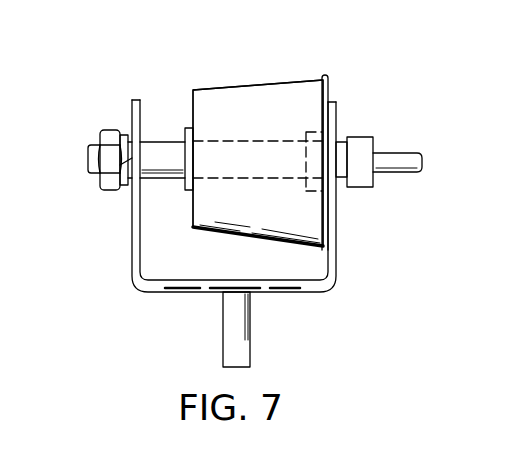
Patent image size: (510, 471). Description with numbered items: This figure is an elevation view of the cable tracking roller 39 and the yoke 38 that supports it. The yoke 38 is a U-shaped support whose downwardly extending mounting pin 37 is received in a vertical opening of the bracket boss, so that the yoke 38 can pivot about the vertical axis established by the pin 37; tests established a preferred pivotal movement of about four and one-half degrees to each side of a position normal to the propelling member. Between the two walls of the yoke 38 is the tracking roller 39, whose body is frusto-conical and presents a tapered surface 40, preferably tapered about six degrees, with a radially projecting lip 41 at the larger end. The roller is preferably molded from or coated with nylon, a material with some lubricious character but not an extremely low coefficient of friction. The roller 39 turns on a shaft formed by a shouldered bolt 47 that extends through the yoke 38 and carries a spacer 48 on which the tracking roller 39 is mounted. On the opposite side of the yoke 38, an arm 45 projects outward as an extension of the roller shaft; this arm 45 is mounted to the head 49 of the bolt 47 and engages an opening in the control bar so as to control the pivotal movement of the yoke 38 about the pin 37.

The mounting pin 37 is at (250, 343).
The yoke 38 is at (132, 243).
The cable tracking roller 39 is at (243, 70).
The tapered surface 40 is at (278, 82).
The radially projecting lip 41 is at (328, 82).
The arm 45 is at (403, 152).
The shouldered bolt 47 is at (88, 170).
The spacer 48 is at (160, 141).
The head 49 is at (360, 187).